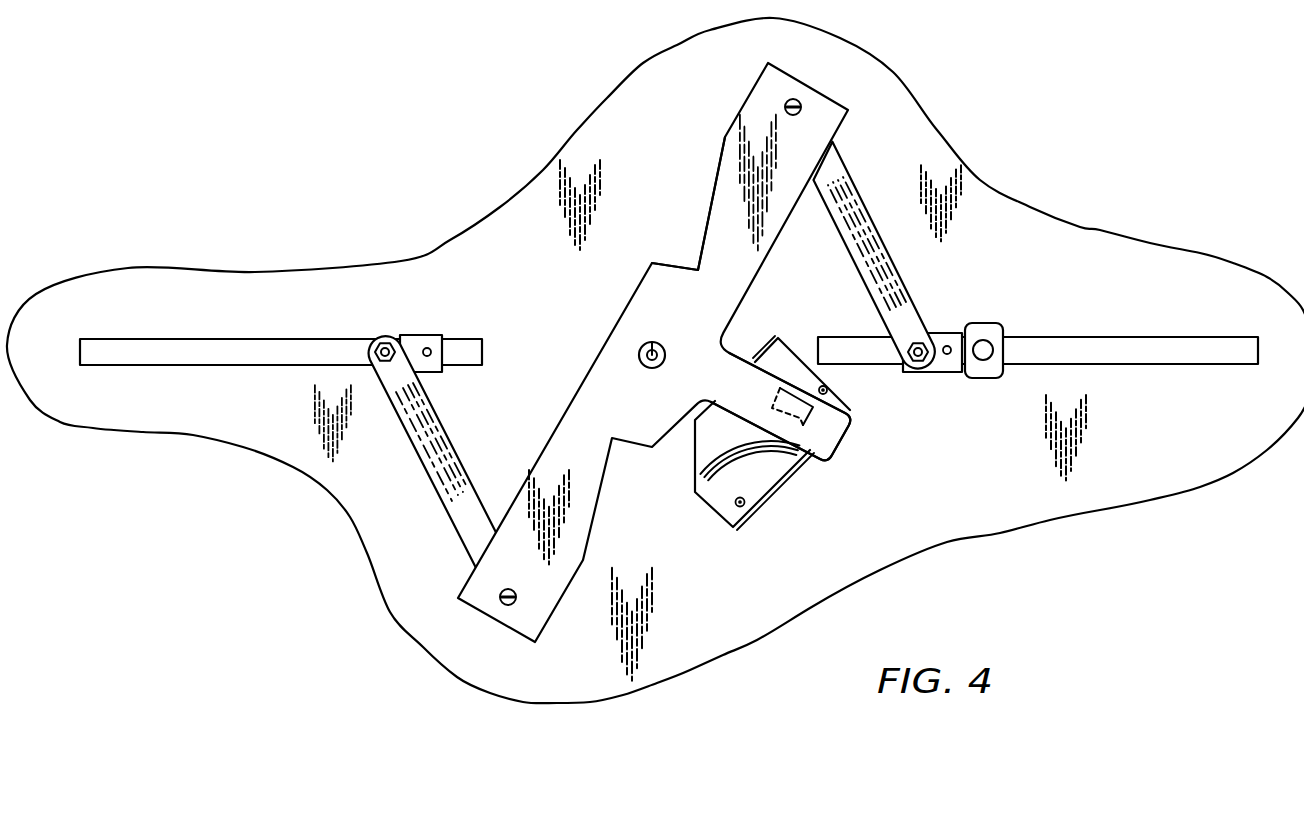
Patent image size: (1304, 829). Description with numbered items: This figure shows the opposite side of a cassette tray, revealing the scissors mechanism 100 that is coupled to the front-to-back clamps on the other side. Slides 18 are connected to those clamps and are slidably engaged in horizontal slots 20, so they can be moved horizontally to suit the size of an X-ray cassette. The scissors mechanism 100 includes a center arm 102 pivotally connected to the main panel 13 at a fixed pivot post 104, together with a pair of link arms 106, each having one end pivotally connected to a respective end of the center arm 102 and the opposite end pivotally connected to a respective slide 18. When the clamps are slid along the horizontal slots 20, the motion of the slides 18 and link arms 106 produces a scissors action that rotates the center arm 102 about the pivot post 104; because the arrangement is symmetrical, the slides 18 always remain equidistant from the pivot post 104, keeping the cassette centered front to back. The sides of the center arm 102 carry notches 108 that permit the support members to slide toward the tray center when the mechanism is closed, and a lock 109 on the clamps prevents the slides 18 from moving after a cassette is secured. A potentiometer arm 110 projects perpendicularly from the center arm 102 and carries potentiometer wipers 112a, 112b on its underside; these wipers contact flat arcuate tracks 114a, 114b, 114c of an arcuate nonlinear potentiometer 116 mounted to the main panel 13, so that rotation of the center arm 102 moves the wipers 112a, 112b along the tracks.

The main panel 13 is at (937, 147).
The slides 18 is at (417, 333).
The horizontal slots 20 is at (159, 367).
The scissors mechanism 100 is at (597, 330).
The center arm 102 is at (562, 413).
The pivot post 104 is at (655, 346).
The link arms 106 is at (452, 432).
The notches 108 is at (690, 264).
The lock 109 is at (988, 322).
The potentiometer arm 110 is at (848, 437).
The potentiometer wiper 112a is at (793, 424).
The potentiometer wiper 112b is at (773, 417).
The arcuate track 114a is at (715, 495).
The arcuate track 114b is at (700, 480).
The arcuate track 114c is at (700, 470).
The arcuate nonlinear potentiometer 116 is at (794, 488).